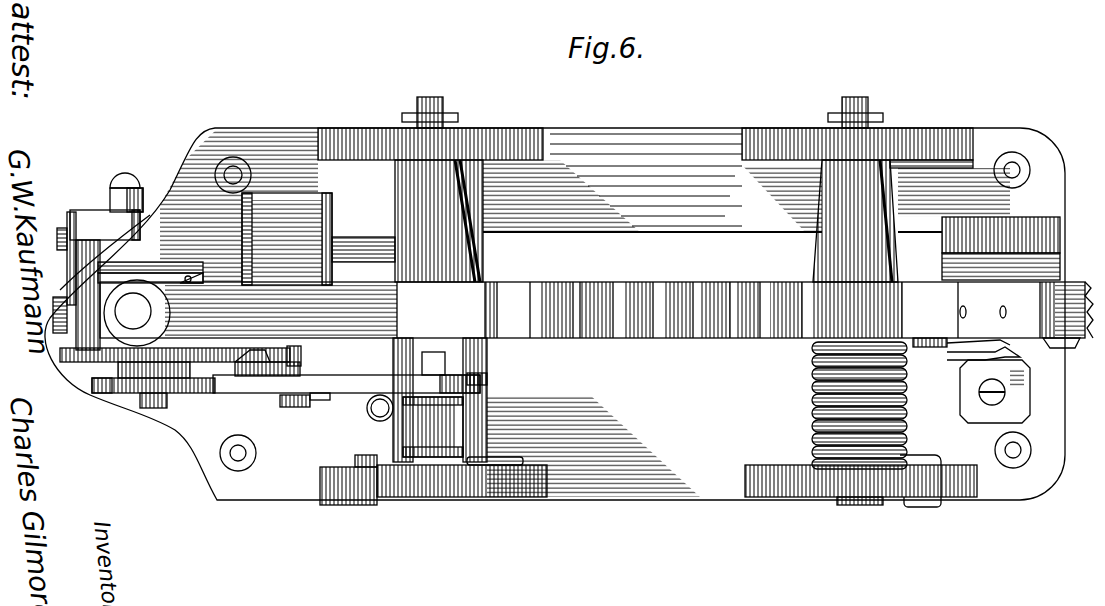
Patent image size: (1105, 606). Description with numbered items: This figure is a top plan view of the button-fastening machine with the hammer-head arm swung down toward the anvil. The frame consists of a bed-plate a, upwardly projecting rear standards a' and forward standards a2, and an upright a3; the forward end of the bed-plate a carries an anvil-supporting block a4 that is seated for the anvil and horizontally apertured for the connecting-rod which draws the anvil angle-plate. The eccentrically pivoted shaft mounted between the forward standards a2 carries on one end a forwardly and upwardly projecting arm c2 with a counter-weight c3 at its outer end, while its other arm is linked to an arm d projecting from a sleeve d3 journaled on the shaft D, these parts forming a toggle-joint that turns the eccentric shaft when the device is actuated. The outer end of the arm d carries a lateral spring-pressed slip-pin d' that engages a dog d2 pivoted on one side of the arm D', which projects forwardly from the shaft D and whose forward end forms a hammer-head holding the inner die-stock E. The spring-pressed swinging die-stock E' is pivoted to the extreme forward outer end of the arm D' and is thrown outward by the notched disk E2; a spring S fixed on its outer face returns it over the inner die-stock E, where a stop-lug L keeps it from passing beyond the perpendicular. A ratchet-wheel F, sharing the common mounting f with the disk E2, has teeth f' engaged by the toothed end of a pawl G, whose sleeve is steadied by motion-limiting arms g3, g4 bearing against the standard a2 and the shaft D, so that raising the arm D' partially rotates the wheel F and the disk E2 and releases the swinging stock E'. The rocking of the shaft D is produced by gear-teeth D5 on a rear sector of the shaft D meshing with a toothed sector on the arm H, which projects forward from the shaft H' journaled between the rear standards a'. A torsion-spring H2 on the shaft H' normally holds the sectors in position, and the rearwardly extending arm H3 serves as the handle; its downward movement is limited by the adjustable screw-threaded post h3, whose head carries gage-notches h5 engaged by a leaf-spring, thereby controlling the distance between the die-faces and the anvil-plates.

The bed-plate a is at (555, 314).
The rear standards a' is at (677, 314).
The forward standards a2 is at (500, 130).
The upright a3 is at (1035, 240).
The anvil-supporting block a4 is at (166, 268).
The projecting arm c2 is at (363, 258).
The counter-weight c3 is at (322, 238).
The shaft D is at (440, 311).
The arm D' is at (596, 310).
The gear-teeth D5 is at (555, 280).
The arm H is at (860, 299).
The shaft H' is at (855, 221).
The torsion-spring H2 is at (812, 360).
The rearwardly-extending arm H3 is at (1082, 340).
The adjustable screw-threaded post h3 is at (960, 356).
The gage-notches h5 is at (961, 345).
The stop-lug L is at (985, 362).
The spring S is at (62, 290).
The inner die-stock E is at (92, 292).
The swinging die-stock E' is at (126, 181).
The disk E2 is at (132, 354).
The ratchet-wheel F is at (118, 394).
The common mounting f is at (141, 422).
The teeth f' is at (85, 406).
The pawl G is at (346, 376).
The arm d is at (492, 374).
The spring-pressed slip-pin d' is at (295, 412).
The dog d2 is at (268, 352).
The sleeve d3 is at (410, 427).
The motion-limiting arm g3 is at (350, 490).
The motion-limiting arm g4 is at (518, 467).